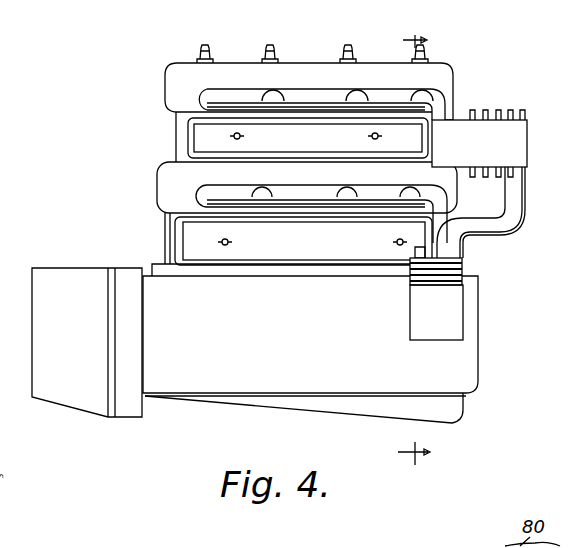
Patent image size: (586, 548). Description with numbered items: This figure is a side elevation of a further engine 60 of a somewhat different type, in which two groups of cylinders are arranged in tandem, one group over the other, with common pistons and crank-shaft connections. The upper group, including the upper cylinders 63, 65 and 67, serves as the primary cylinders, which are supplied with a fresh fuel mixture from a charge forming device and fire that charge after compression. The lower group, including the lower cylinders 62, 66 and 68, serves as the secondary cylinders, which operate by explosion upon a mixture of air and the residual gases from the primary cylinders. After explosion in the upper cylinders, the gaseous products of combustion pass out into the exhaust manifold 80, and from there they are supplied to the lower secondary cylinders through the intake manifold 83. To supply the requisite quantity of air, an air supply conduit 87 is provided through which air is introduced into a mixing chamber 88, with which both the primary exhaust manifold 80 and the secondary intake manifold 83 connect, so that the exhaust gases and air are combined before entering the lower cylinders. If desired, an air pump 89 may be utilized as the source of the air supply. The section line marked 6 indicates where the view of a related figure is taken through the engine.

The section line 6- 6 is at (401, 248).
The engine 60 is at (188, 136).
The lower cylinder 62 is at (176, 178).
The upper cylinder 63 is at (252, 72).
The upper cylinder 65 is at (328, 73).
The lower cylinder 66 is at (352, 192).
The upper cylinder 67 is at (178, 72).
The lower cylinder 68 is at (415, 192).
The exhaust manifold 80 is at (217, 98).
The intake manifold 83 is at (220, 184).
The air supply conduit 87 is at (517, 203).
The mixing chamber 88 is at (510, 142).
The air pump 89 is at (418, 327).